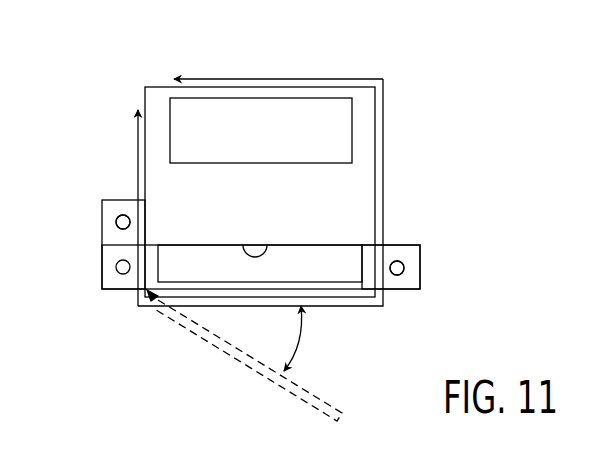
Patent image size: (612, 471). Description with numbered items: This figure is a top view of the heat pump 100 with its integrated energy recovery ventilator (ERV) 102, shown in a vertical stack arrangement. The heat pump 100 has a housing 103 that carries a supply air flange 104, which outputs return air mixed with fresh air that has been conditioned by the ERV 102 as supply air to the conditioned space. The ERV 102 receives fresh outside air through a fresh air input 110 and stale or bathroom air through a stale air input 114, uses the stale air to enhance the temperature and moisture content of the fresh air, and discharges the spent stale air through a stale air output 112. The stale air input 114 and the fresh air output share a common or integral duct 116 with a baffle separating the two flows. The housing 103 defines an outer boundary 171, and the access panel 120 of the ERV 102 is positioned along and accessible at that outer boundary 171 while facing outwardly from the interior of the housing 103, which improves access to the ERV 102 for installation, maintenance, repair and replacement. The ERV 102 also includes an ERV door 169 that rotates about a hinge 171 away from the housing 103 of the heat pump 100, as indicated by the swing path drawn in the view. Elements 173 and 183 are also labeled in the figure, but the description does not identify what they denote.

The heat pump 100 is at (457, 82).
The energy recovery ventilator 102 is at (155, 246).
The housing 103 is at (389, 175).
The supply air flange 104 is at (363, 262).
The fresh air input 110 is at (107, 268).
The stale air output 112 is at (124, 208).
The stale air input 114 is at (412, 252).
The duct 116 is at (434, 277).
The access panel 120 is at (213, 306).
The ERV door 169 is at (218, 349).
The outer boundary 171 is at (230, 78).
The display panel 173 is at (343, 205).
The notch 183 is at (265, 244).